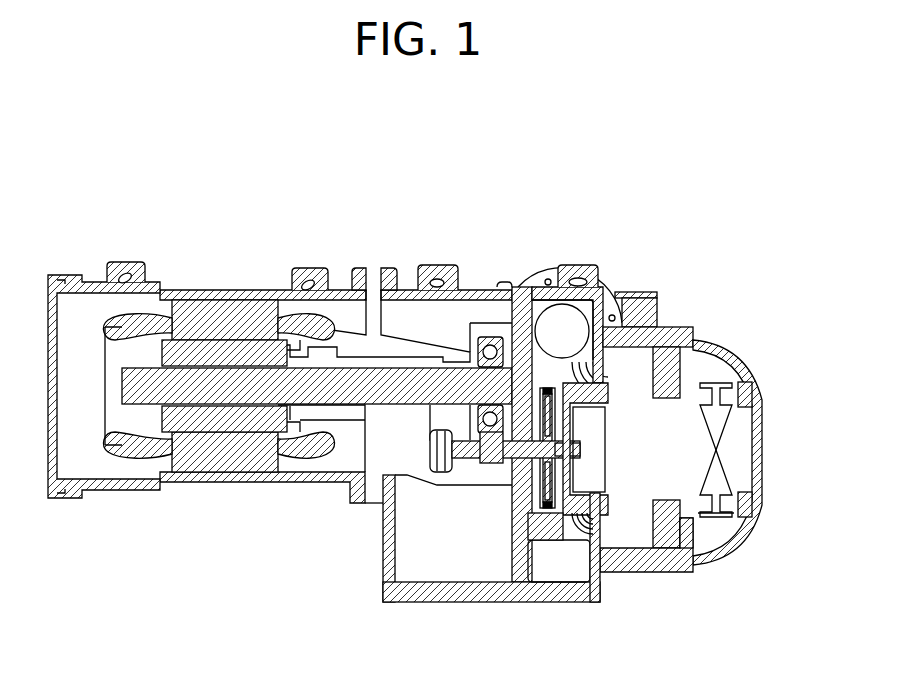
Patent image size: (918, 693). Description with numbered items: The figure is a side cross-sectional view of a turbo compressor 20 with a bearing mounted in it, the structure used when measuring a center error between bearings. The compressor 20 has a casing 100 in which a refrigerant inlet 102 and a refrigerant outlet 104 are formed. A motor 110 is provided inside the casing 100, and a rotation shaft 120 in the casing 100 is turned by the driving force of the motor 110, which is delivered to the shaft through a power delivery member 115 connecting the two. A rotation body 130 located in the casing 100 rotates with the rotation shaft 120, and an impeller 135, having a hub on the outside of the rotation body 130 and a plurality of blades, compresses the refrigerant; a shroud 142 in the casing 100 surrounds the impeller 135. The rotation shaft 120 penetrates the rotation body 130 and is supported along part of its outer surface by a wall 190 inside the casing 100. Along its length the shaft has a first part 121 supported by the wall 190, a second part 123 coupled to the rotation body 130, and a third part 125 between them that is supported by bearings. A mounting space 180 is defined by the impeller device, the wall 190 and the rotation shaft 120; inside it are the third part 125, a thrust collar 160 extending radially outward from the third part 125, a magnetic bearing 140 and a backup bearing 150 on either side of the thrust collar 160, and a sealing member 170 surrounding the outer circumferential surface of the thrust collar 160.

The compressor 20 is at (358, 193).
The motor 110 is at (192, 282).
The casing 100 is at (245, 295).
The wall 190 is at (518, 400).
The refrigerant outlet 104 is at (555, 315).
The sealing member 170 is at (550, 390).
The thrust collar 160 is at (553, 420).
The mounting space 180 is at (537, 488).
The power delivery member 115 is at (477, 407).
The rotation shaft 120 is at (490, 460).
The first part 121 is at (503, 460).
The third part 125 is at (580, 448).
The second part 123 is at (555, 487).
The backup bearing 150 is at (740, 510).
The refrigerant inlet 102 is at (760, 433).
The shroud 142 is at (608, 537).
The impeller 135 is at (603, 568).
The rotation body 130 is at (581, 498).
The magnetic bearing 140 is at (534, 490).